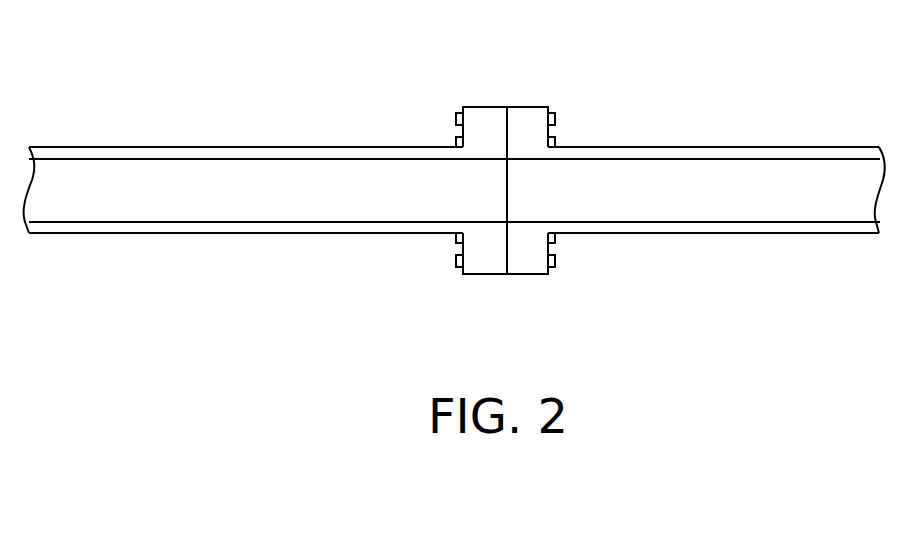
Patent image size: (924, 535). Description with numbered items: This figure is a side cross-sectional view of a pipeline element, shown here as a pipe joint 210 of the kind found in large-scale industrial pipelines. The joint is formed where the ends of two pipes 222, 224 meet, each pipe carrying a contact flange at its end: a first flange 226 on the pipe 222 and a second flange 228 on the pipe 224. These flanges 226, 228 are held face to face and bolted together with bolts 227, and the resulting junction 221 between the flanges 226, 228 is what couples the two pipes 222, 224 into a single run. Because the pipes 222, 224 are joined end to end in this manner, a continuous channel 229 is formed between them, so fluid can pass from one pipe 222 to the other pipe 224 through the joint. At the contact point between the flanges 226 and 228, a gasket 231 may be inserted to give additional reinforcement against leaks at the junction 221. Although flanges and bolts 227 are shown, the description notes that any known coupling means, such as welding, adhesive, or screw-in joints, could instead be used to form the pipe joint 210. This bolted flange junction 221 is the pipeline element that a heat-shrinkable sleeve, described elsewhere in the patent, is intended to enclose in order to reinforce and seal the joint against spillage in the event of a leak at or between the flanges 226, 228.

The pipe joint 210 is at (485, 125).
The junction 221 is at (507, 256).
The pipe 222 is at (247, 146).
The pipe 224 is at (773, 153).
The contact flange 226 is at (481, 258).
The bolt 227 is at (556, 120).
The contact flange 228 is at (536, 255).
The continuous channel 229 is at (319, 192).
The gasket 231 is at (507, 123).